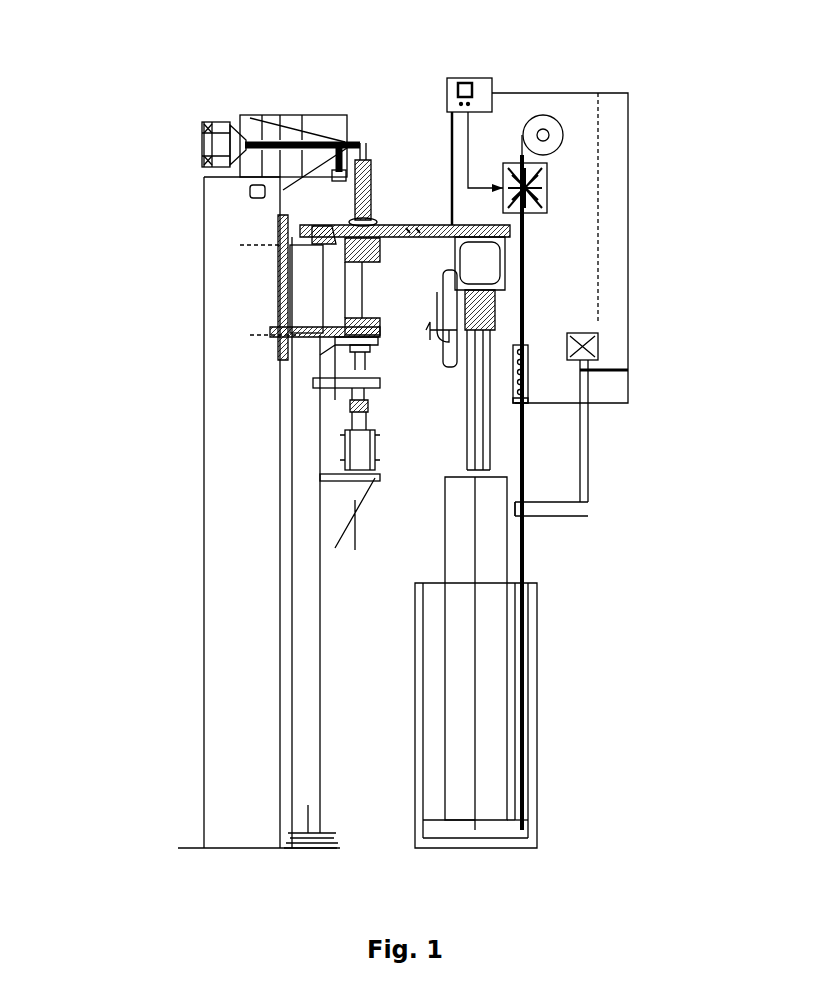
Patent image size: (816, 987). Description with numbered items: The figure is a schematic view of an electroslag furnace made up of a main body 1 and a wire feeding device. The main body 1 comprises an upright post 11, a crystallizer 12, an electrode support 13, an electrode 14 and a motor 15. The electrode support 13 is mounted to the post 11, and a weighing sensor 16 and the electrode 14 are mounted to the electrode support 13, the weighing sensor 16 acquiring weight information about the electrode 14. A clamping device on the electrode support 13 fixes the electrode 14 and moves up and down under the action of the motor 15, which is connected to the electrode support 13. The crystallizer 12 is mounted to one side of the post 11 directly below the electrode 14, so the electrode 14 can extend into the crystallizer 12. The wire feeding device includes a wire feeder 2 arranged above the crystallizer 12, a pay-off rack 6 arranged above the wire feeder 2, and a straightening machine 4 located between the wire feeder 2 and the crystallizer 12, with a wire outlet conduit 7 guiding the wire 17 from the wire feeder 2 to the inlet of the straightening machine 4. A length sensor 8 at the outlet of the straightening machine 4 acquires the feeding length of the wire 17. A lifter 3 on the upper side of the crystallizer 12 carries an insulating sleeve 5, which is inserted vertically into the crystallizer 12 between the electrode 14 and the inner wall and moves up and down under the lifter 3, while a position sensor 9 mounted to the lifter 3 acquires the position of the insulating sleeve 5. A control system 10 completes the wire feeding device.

The main body 1 is at (198, 438).
The wire feeder 2 is at (550, 195).
The lifter 3 is at (600, 348).
The straightening machine 4 is at (532, 364).
The insulating sleeve 5 is at (532, 540).
The pay-off rack 6 is at (566, 122).
The wire outlet conduit 7 is at (528, 283).
The length sensor 8 is at (530, 402).
The position sensor 9 is at (592, 372).
The control system 10 is at (498, 80).
The post 11 is at (200, 693).
The crystallizer 12 is at (532, 819).
The electrode support 13 is at (318, 230).
The electrode 14 is at (480, 678).
The motor 15 is at (200, 128).
The weighing sensor 16 is at (450, 222).
The wire 17 is at (533, 478).